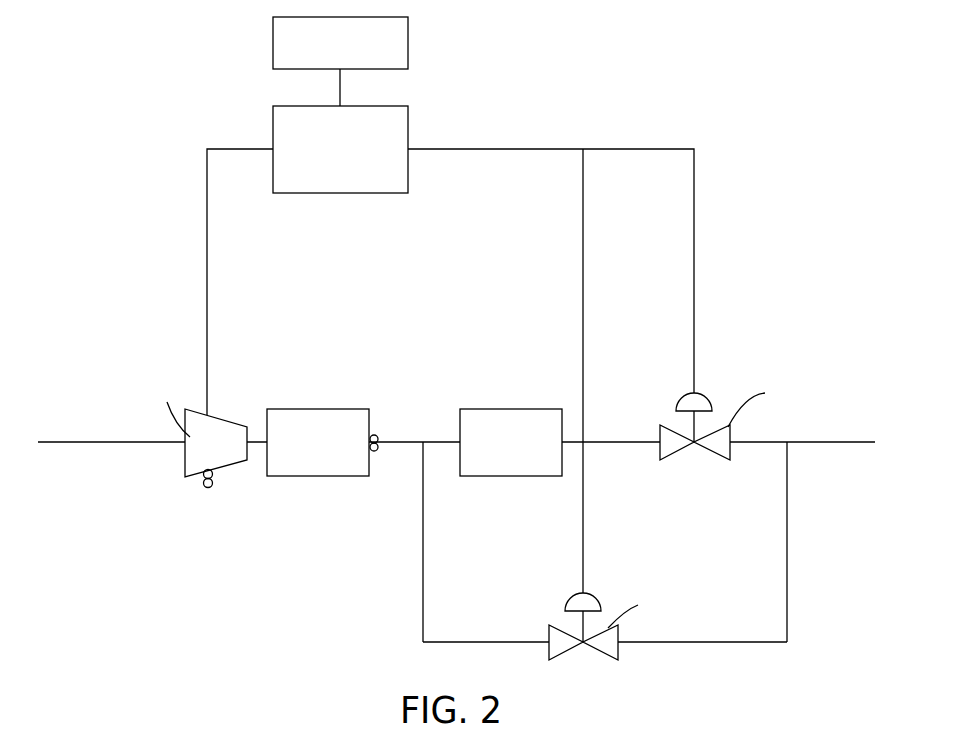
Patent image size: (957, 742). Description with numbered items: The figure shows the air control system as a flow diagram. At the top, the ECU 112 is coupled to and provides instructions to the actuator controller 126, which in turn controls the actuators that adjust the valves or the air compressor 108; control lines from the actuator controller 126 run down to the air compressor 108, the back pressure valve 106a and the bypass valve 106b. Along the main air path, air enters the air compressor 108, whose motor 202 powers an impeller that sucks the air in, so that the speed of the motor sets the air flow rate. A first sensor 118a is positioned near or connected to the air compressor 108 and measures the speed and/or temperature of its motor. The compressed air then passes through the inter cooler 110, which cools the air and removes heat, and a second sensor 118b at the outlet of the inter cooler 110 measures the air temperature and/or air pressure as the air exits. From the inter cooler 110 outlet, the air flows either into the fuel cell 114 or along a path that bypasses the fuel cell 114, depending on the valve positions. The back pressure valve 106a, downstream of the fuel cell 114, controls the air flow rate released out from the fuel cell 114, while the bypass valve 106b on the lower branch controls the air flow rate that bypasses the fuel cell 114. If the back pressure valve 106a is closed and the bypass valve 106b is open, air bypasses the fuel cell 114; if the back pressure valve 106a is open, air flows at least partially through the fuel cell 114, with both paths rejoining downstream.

The ECU 112 is at (408, 44).
The actuator controller 126 is at (408, 172).
The air compressor 108 is at (215, 414).
The motor 202 is at (200, 477).
The first sensor 118a is at (213, 486).
The inter cooler 110 is at (318, 408).
The second sensor 118b is at (380, 437).
The fuel cell 114 is at (508, 477).
The back pressure valve 106a is at (730, 437).
The bypass valve 106b is at (618, 637).